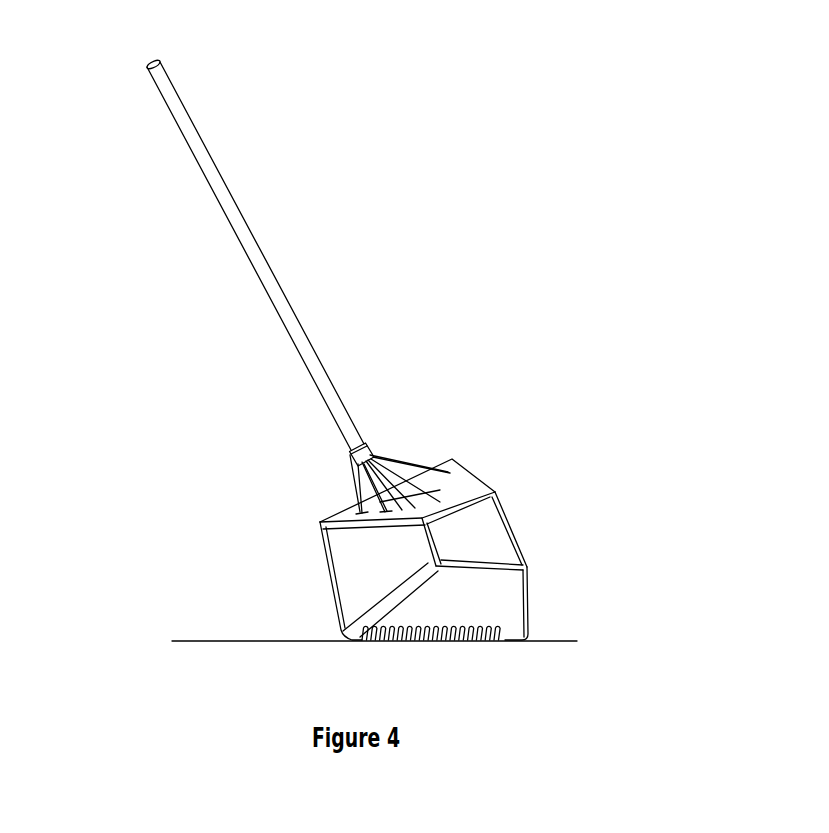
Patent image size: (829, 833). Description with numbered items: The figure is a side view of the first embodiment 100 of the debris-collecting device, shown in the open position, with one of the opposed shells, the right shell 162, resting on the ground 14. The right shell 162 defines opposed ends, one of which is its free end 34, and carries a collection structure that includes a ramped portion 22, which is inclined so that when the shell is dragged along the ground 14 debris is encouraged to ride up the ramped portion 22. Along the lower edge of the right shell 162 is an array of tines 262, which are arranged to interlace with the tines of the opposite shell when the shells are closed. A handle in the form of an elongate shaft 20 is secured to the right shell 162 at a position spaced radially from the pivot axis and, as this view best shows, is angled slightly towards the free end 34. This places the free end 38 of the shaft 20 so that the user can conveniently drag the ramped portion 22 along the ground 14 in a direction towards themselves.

The first embodiment 100 is at (233, 404).
The shaft 20 is at (298, 287).
The free end 38 is at (160, 75).
The free end 34 is at (442, 573).
The right shell 162 is at (493, 540).
The ramped portion 22 is at (505, 605).
The tines 262 is at (457, 643).
The ground 14 is at (218, 640).